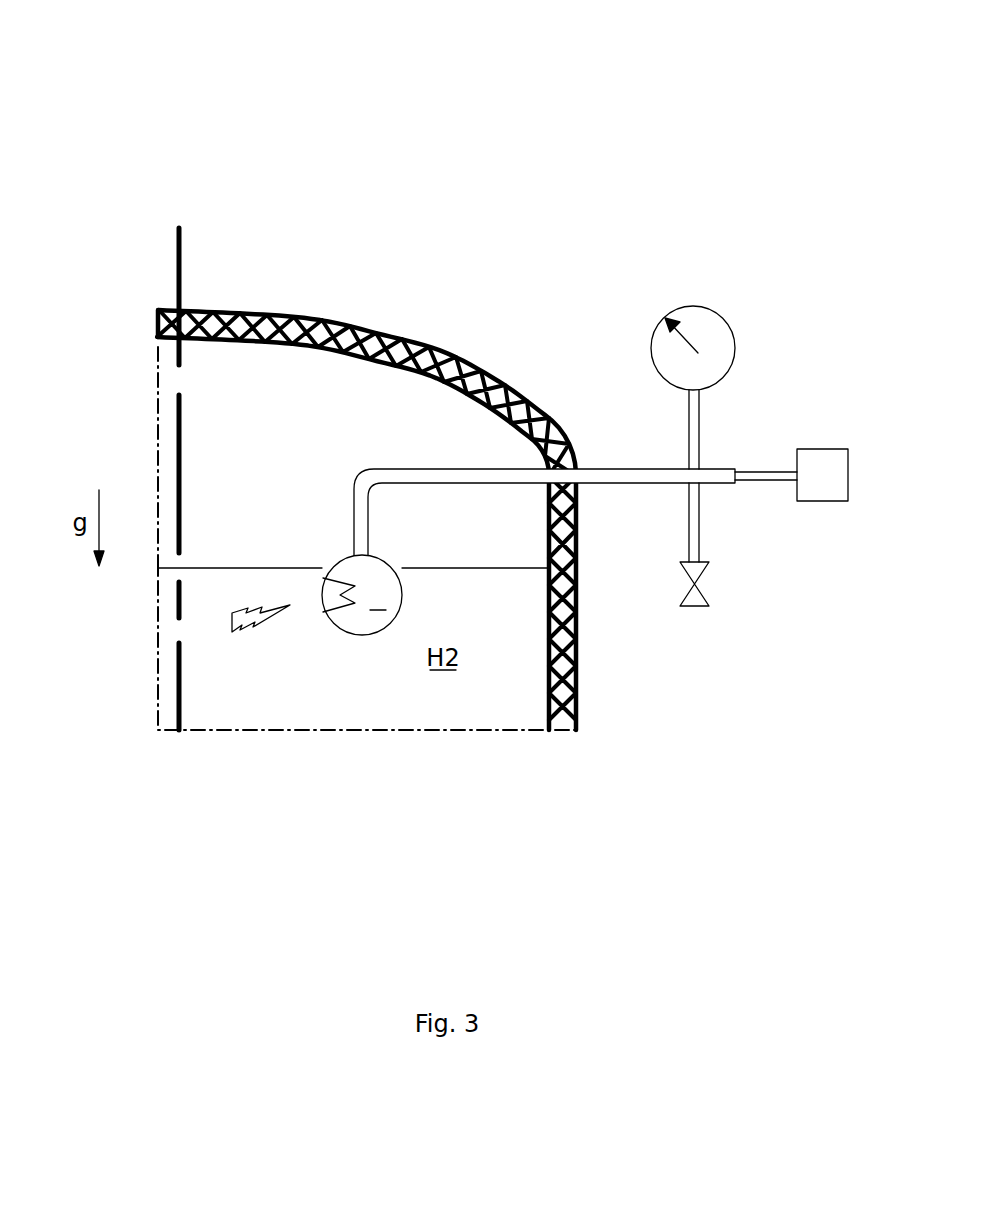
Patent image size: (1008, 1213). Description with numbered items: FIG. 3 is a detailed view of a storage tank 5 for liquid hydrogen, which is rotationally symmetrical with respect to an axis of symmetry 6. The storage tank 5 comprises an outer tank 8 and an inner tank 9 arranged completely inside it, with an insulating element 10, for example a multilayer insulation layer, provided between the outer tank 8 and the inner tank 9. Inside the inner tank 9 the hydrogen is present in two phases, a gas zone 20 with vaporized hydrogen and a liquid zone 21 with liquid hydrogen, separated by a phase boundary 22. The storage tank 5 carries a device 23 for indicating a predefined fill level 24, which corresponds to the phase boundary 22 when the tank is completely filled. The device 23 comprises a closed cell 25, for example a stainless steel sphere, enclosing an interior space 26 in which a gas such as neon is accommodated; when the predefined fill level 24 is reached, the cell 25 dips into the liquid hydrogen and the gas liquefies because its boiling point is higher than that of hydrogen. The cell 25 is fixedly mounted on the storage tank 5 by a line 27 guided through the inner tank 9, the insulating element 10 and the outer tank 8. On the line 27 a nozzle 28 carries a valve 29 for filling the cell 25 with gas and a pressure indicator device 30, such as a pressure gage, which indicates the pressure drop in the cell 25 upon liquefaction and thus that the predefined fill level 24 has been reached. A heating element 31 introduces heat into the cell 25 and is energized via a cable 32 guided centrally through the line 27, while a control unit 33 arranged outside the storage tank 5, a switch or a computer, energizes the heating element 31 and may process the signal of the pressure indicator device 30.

The storage tank 5 is at (318, 90).
The axis of symmetry 6 is at (177, 263).
The outer tank 8 is at (212, 310).
The inner tank 9 is at (198, 340).
The insulating element 10 is at (252, 332).
The gas zone 20 is at (307, 370).
The liquid zone 21 is at (207, 682).
The phase boundary 22 is at (261, 634).
The device for indicating a predefined fill level 23 is at (428, 447).
The predefined fill level 24 is at (525, 568).
The cell 25 is at (343, 633).
The interior space 26 is at (360, 622).
The line 27 is at (472, 468).
The nozzle 28 is at (699, 543).
The valve 29 is at (694, 606).
The pressure indicator device 30 is at (693, 306).
The heating element 31 is at (338, 580).
The cable 32 is at (760, 472).
The control unit 33 is at (808, 491).